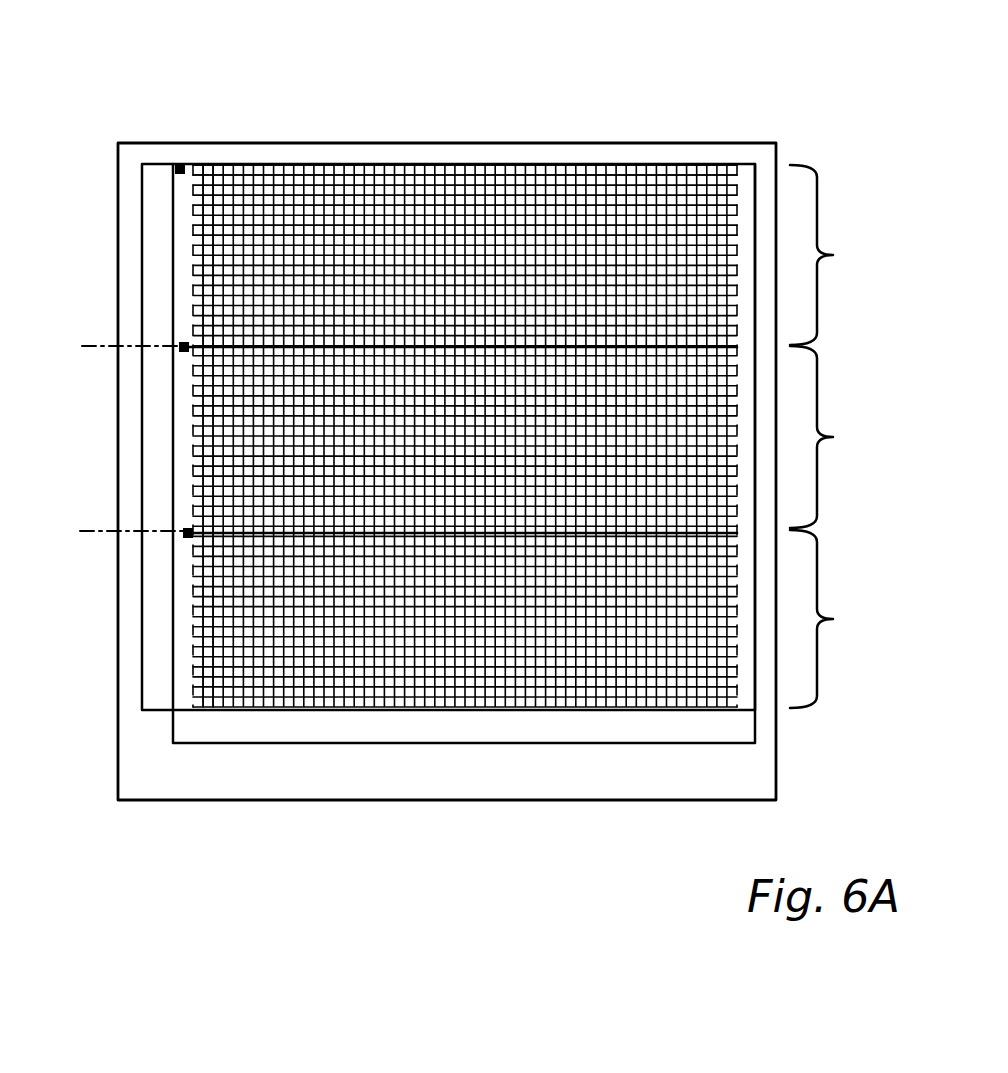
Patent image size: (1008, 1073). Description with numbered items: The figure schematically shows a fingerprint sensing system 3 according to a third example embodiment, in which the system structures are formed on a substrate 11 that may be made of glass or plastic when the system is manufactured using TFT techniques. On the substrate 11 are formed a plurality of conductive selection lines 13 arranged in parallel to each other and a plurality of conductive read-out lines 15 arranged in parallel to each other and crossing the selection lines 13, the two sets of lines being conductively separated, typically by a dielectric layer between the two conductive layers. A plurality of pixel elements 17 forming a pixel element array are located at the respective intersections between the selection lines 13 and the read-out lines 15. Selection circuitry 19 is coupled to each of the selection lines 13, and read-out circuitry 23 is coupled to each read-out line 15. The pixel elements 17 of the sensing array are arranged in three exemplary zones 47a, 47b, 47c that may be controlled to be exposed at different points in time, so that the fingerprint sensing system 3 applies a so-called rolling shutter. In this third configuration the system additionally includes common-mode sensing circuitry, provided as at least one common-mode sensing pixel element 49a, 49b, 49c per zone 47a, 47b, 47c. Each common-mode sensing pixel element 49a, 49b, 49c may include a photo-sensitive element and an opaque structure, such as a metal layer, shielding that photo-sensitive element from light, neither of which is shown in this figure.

The fingerprint sensing system 3 is at (815, 99).
The substrate 11 is at (740, 803).
The selection lines 13 is at (247, 213).
The read-out lines 15 is at (207, 232).
The pixel elements 17 is at (213, 200).
The selection circuitry 19 is at (155, 373).
The read-out circuitry 23 is at (638, 730).
The first zone 47a is at (840, 255).
The second zone 47b is at (840, 437).
The third zone 47c is at (839, 619).
The common-mode sensing pixel element 49a is at (176, 168).
The common-mode sensing pixel element 49b is at (181, 347).
The common-mode sensing pixel element 49c is at (185, 535).